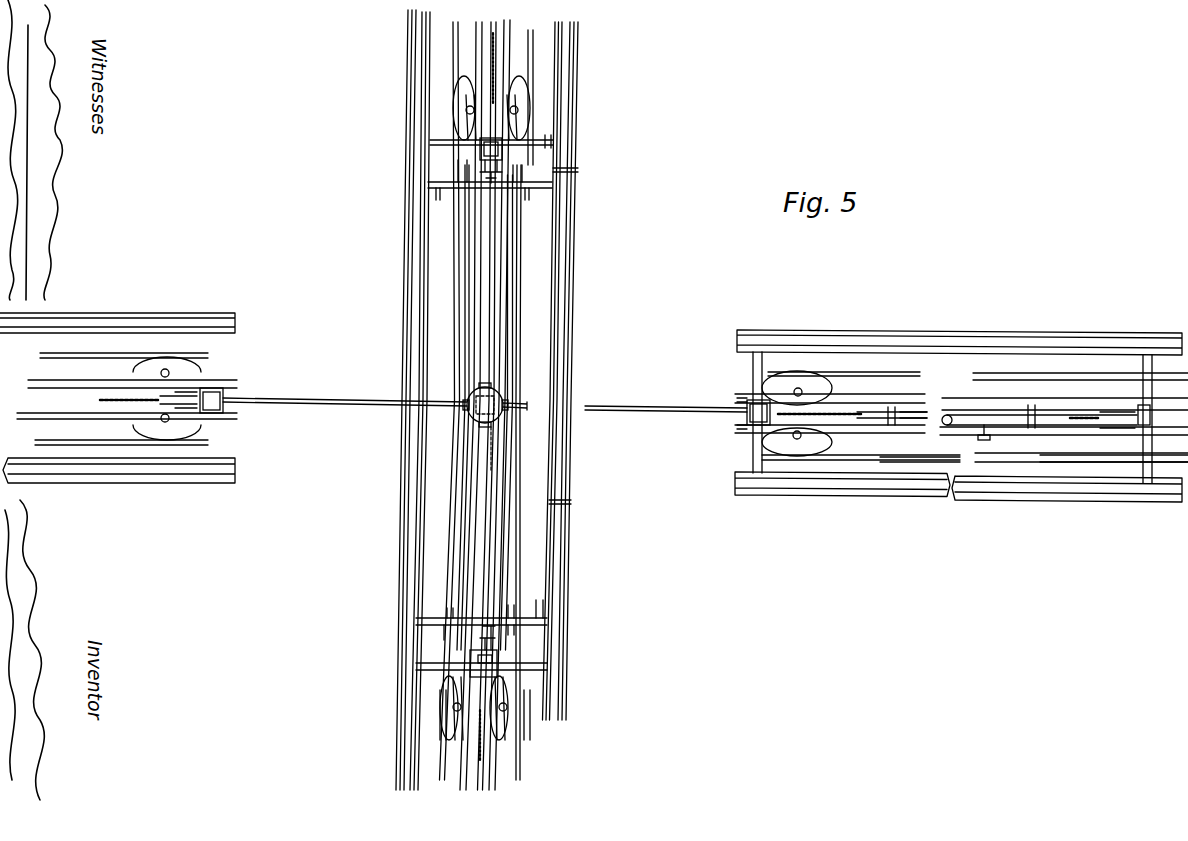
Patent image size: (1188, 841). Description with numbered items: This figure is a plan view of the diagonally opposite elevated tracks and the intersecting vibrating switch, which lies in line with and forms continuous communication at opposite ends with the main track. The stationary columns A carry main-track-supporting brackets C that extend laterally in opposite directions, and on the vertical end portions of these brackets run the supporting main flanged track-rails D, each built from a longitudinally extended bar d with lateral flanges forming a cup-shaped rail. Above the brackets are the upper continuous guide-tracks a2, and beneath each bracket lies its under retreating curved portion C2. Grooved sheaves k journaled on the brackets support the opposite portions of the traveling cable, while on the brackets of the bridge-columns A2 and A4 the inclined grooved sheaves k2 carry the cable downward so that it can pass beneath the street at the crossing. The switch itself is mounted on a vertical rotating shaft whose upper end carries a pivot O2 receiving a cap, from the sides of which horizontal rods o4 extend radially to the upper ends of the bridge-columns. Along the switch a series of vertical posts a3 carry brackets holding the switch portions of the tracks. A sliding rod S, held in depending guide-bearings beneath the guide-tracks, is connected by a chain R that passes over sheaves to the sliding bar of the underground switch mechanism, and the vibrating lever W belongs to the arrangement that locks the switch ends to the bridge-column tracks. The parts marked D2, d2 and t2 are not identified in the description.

The outer guide rails D2 is at (560, 352).
The vibrating lever W is at (457, 305).
The pivot O2 is at (532, 406).
The rods o4 is at (485, 480).
The bridge column A4 is at (505, 150).
The under retreating curved portion C2 is at (484, 402).
The grooved sheaves k2 is at (998, 376).
The main-track-supporting brackets C is at (1142, 368).
The main flanged track-rails D is at (565, 690).
The longitudinal bars d2 is at (880, 340).
The longitudinally-extended bar d is at (924, 340).
The bridge column A2 is at (223, 413).
The stationary columns A is at (747, 425).
The chain R is at (840, 410).
The sliding rod S is at (915, 410).
The upper continuous guide-tracks a2 is at (745, 402).
The vertical posts a3 is at (745, 425).
The grooved sheaves k is at (912, 458).
The bracket t2 is at (976, 440).